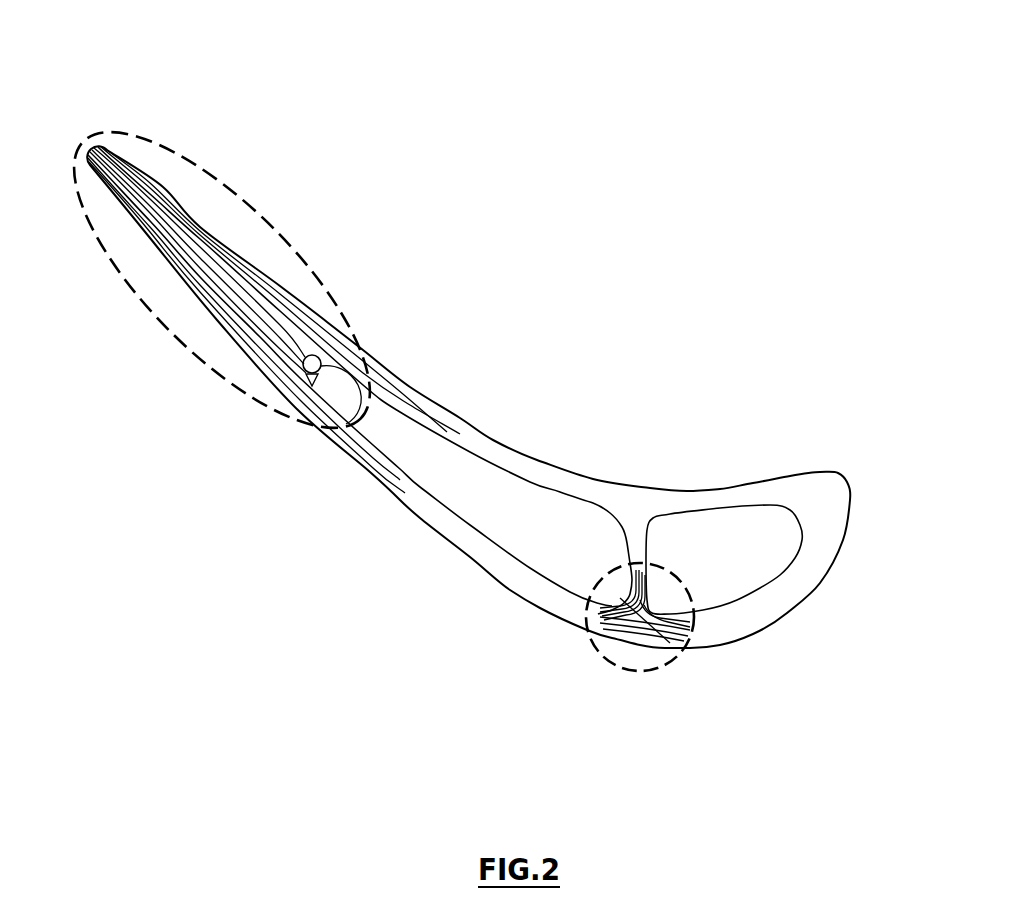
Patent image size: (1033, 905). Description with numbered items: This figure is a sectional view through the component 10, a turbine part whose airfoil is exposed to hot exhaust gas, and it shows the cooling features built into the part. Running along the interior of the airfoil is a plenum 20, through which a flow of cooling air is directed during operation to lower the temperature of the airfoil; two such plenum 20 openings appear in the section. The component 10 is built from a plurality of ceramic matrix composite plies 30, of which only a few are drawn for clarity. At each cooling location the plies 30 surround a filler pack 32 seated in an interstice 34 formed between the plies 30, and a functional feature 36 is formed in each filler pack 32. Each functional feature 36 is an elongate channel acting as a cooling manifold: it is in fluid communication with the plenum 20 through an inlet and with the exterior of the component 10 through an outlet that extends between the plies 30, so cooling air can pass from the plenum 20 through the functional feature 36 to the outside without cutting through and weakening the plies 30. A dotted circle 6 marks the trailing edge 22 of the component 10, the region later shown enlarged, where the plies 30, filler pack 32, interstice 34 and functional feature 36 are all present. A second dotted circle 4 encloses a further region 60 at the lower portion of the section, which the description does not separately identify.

The attachment region 4 is at (670, 657).
The dotted circle 6 is at (94, 233).
The component 10 is at (853, 508).
The plenum 20 is at (553, 547).
The trailing edge 22 is at (143, 120).
The ceramic matrix composite plies 30 is at (318, 356).
The filler pack 32 is at (351, 331).
The interstice 34 is at (275, 353).
The functional feature 36 is at (320, 379).
The splice region 60 is at (601, 628).